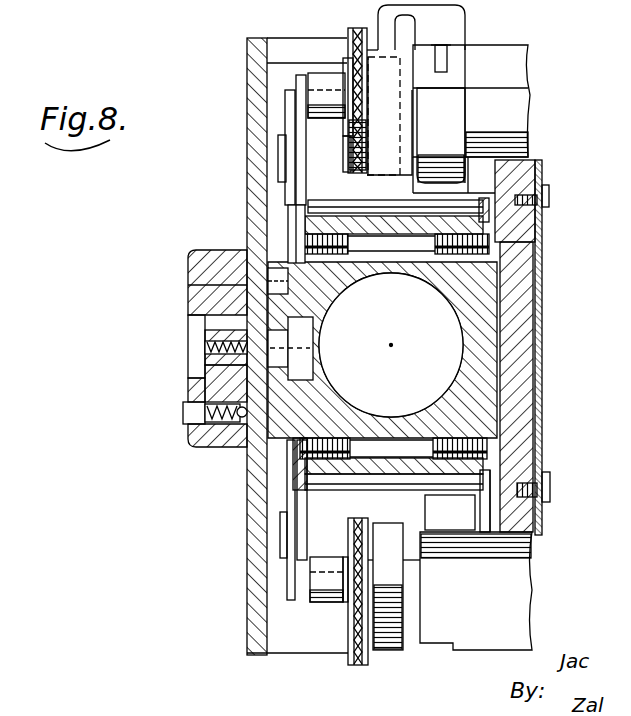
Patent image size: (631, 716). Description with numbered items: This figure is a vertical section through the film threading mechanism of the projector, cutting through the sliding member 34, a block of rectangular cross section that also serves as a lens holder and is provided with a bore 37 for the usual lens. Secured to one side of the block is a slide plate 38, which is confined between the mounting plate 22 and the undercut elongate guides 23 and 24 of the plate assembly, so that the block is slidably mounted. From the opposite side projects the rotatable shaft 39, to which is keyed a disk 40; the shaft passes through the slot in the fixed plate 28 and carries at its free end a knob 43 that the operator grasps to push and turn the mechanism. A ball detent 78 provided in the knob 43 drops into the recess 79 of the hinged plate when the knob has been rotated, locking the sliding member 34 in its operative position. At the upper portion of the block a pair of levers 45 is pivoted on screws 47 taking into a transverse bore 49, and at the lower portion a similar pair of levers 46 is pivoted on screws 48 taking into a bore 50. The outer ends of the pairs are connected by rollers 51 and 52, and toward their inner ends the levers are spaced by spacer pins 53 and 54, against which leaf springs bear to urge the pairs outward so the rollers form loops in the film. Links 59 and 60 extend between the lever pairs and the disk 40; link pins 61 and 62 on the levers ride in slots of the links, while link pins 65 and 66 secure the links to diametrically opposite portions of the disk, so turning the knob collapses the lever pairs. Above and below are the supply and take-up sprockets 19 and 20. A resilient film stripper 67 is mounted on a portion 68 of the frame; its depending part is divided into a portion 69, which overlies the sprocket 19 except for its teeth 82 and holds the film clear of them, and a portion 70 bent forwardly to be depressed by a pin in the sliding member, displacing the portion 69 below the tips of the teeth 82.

The supply sprocket 19 is at (354, 30).
The take-up sprocket 20 is at (350, 650).
The mounting plate 22 is at (548, 172).
The elongate guide 23 is at (512, 162).
The elongate guide 24 is at (525, 470).
The fixed plate 28 is at (250, 538).
The sliding member 34 is at (395, 420).
The bore 37 is at (340, 400).
The slide plate 38 is at (520, 283).
The rotatable shaft 39 is at (188, 334).
The disk 40 is at (288, 240).
The knob 43 is at (188, 255).
The pair of levers 45 is at (306, 190).
The pair of levers 46 is at (490, 445).
The screws 47 is at (345, 250).
The screws 48 is at (330, 440).
The bore 49 is at (396, 255).
The bore 50 is at (400, 460).
The roller 51 is at (320, 73).
The roller 52 is at (325, 594).
The spacer pin 53 is at (400, 183).
The spacer pin 54 is at (350, 480).
The link 59 is at (290, 95).
The link 60 is at (287, 502).
The link pin 61 is at (278, 153).
The link pin 62 is at (290, 555).
The link pin 65 is at (262, 430).
The link pin 66 is at (268, 275).
The film stripper 67 is at (460, 60).
The frame portion 68 is at (515, 65).
The stripper portion 69 is at (355, 160).
The stripper portion 70 is at (450, 133).
The ball detent 78 is at (240, 430).
The recess 79 is at (188, 285).
The sprocket teeth 82 is at (360, 130).